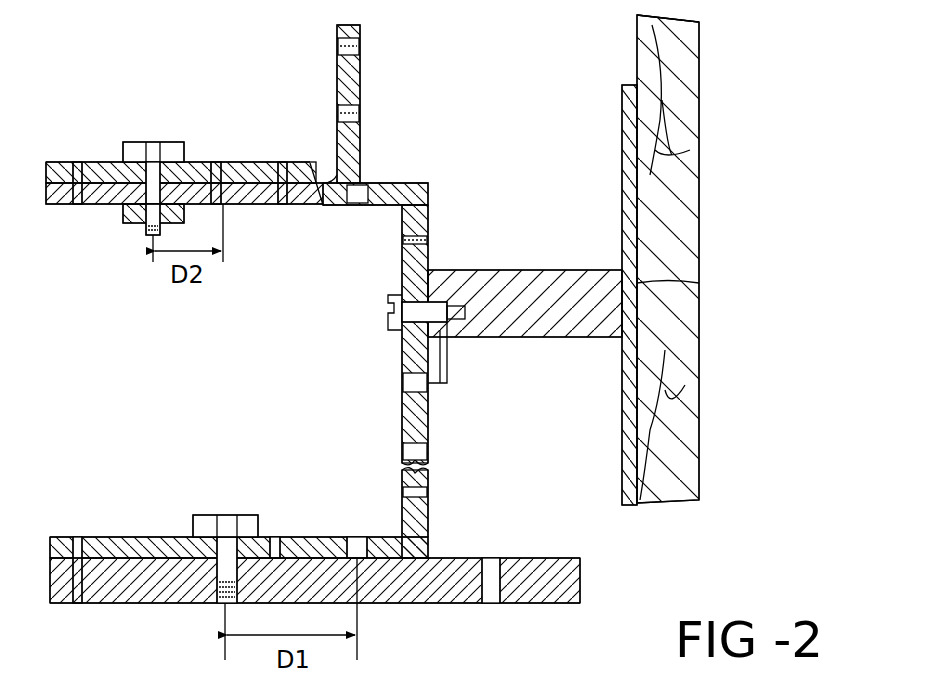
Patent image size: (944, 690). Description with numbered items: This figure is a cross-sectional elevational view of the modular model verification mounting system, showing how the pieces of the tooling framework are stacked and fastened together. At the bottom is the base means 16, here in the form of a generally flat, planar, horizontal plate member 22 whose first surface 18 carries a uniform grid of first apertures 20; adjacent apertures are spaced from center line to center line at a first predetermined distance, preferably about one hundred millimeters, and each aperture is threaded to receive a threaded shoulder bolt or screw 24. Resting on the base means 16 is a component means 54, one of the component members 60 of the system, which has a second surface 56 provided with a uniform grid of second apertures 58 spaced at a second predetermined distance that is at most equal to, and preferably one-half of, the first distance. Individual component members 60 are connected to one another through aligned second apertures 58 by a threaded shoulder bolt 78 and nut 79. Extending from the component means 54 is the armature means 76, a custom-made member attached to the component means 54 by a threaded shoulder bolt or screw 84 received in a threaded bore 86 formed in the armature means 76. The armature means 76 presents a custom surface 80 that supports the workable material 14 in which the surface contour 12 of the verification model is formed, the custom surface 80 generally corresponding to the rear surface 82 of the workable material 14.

The surface contour 12 is at (702, 228).
The workable material 14 is at (700, 160).
The base means 16 is at (527, 606).
The first surface 18 is at (550, 559).
The first apertures 20 is at (485, 562).
The plate member 22 is at (582, 585).
The threaded shoulder bolt 24 is at (205, 513).
The component means 54 is at (336, 62).
The second surface 56 is at (362, 152).
The second apertures 58 is at (362, 112).
The component member 60 is at (362, 70).
The armature means 76 is at (580, 268).
The threaded shoulder bolt 78 is at (136, 146).
The nut 79 is at (138, 226).
The custom surface 80 is at (699, 288).
The rear surface 82 is at (636, 42).
The threaded shoulder bolt 84 is at (386, 330).
The threaded bore 86 is at (466, 320).